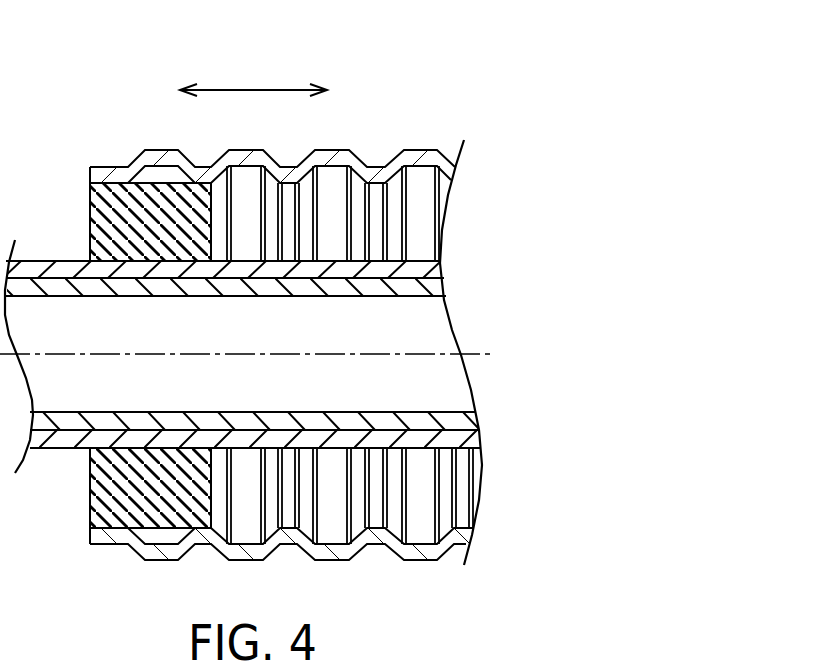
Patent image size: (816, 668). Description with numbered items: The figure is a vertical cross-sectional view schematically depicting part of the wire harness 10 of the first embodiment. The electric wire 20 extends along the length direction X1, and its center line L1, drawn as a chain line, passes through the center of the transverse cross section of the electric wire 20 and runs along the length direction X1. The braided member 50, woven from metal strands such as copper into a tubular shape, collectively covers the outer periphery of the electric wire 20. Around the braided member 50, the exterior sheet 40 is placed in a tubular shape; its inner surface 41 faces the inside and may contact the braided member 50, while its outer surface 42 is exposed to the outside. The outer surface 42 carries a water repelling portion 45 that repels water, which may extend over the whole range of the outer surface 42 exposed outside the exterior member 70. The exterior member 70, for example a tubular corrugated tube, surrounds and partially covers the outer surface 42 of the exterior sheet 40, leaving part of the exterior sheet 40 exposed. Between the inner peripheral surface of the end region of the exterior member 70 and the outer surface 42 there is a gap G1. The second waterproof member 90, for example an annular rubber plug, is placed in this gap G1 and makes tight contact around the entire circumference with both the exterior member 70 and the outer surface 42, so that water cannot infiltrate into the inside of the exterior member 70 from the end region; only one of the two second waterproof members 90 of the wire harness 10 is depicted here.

The wire harness 10 is at (443, 65).
The electric wire 20 is at (68, 430).
The exterior sheet 40 is at (339, 268).
The inner surface 41 is at (417, 428).
The outer surface 42 is at (420, 450).
The water repelling portion 45 is at (63, 261).
The braided member 50 is at (312, 297).
The exterior member 70 is at (343, 148).
The second waterproof member 90 is at (92, 503).
The gap G1 is at (158, 170).
The center line L1 is at (258, 356).
The length direction X1 is at (257, 89).